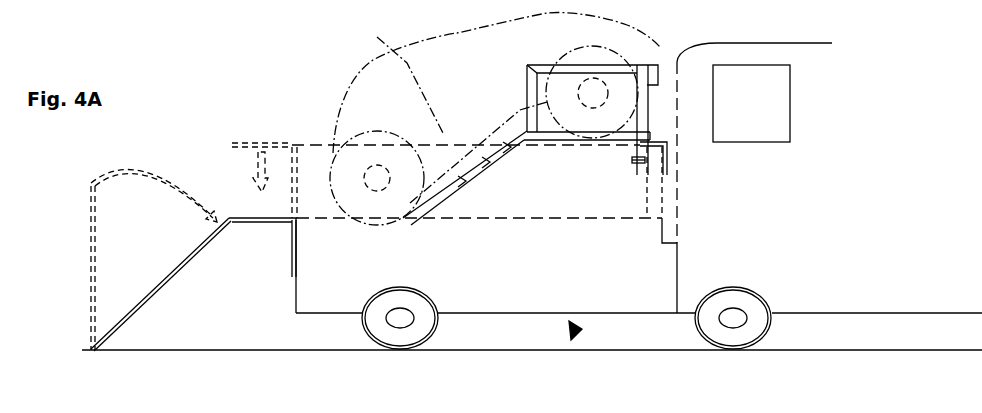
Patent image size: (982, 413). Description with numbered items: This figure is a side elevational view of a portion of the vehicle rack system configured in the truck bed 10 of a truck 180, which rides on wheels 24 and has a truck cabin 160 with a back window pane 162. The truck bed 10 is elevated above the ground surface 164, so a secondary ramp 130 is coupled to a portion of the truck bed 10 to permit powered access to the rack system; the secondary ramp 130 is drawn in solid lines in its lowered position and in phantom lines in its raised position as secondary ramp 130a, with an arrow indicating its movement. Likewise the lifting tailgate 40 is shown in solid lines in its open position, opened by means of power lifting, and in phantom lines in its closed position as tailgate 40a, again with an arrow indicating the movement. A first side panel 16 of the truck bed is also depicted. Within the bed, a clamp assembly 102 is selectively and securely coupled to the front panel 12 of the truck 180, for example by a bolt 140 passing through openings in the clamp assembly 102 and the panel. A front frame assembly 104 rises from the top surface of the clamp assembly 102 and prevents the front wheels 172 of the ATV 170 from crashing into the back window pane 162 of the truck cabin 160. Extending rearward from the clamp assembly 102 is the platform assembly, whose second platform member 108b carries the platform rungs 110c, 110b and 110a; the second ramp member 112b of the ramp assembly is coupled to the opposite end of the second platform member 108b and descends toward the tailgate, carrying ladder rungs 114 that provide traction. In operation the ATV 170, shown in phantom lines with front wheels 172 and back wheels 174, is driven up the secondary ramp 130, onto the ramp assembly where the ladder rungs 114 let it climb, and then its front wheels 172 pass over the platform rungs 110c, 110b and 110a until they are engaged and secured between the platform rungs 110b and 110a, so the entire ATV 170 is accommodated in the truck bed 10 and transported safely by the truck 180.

The truck bed 10 is at (498, 220).
The front panel 12 is at (660, 192).
The first side panel 16 is at (556, 270).
The wheels 24 is at (437, 333).
The tailgate 40 is at (294, 232).
The tailgate 40a is at (290, 183).
The clamp assembly 102 is at (666, 165).
The front frame assembly 104 is at (664, 103).
The second platform member 108b is at (628, 135).
The platform rung 110a is at (610, 133).
The platform rung 110b is at (572, 135).
The platform rung 110c is at (527, 125).
The second ramp member 112b is at (438, 200).
The ladder rungs 114 is at (465, 182).
The secondary ramp 130 is at (168, 284).
The secondary ramp 130a is at (93, 243).
The bolt 140 is at (630, 165).
The truck cabin 160 is at (816, 222).
The back window pane 162 is at (680, 107).
The ground surface 164 is at (293, 350).
The ATV 170 is at (516, 68).
The front wheels 172 is at (650, 47).
The back wheels 174 is at (380, 222).
The truck 180 is at (575, 338).